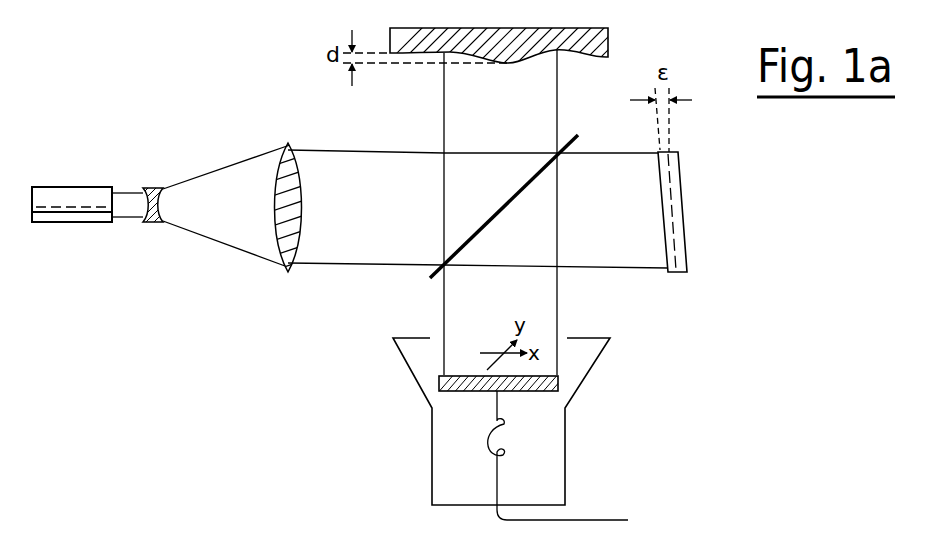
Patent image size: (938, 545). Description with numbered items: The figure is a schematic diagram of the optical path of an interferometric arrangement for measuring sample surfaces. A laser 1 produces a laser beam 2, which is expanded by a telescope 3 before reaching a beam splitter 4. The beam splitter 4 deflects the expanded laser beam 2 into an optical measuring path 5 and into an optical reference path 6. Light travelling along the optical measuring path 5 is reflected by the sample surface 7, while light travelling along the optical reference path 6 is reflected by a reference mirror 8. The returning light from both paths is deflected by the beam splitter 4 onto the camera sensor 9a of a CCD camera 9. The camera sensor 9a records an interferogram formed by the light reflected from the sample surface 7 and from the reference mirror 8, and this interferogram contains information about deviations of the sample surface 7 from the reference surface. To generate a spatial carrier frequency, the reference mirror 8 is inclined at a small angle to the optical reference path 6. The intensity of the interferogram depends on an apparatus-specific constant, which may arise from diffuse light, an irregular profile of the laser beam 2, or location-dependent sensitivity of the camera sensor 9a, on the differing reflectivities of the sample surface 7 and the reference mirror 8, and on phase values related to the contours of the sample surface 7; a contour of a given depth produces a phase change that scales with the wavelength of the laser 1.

The laser 1 is at (53, 207).
The laser beam 2 is at (125, 217).
The telescope 3 is at (284, 265).
The beam splitter 4 is at (570, 137).
The optical measuring path 5 is at (540, 108).
The optical reference path 6 is at (587, 243).
The sample surface 7 is at (606, 60).
The reference mirror 8 is at (667, 255).
The CCD camera 9 is at (577, 397).
The camera sensor 9a is at (547, 372).